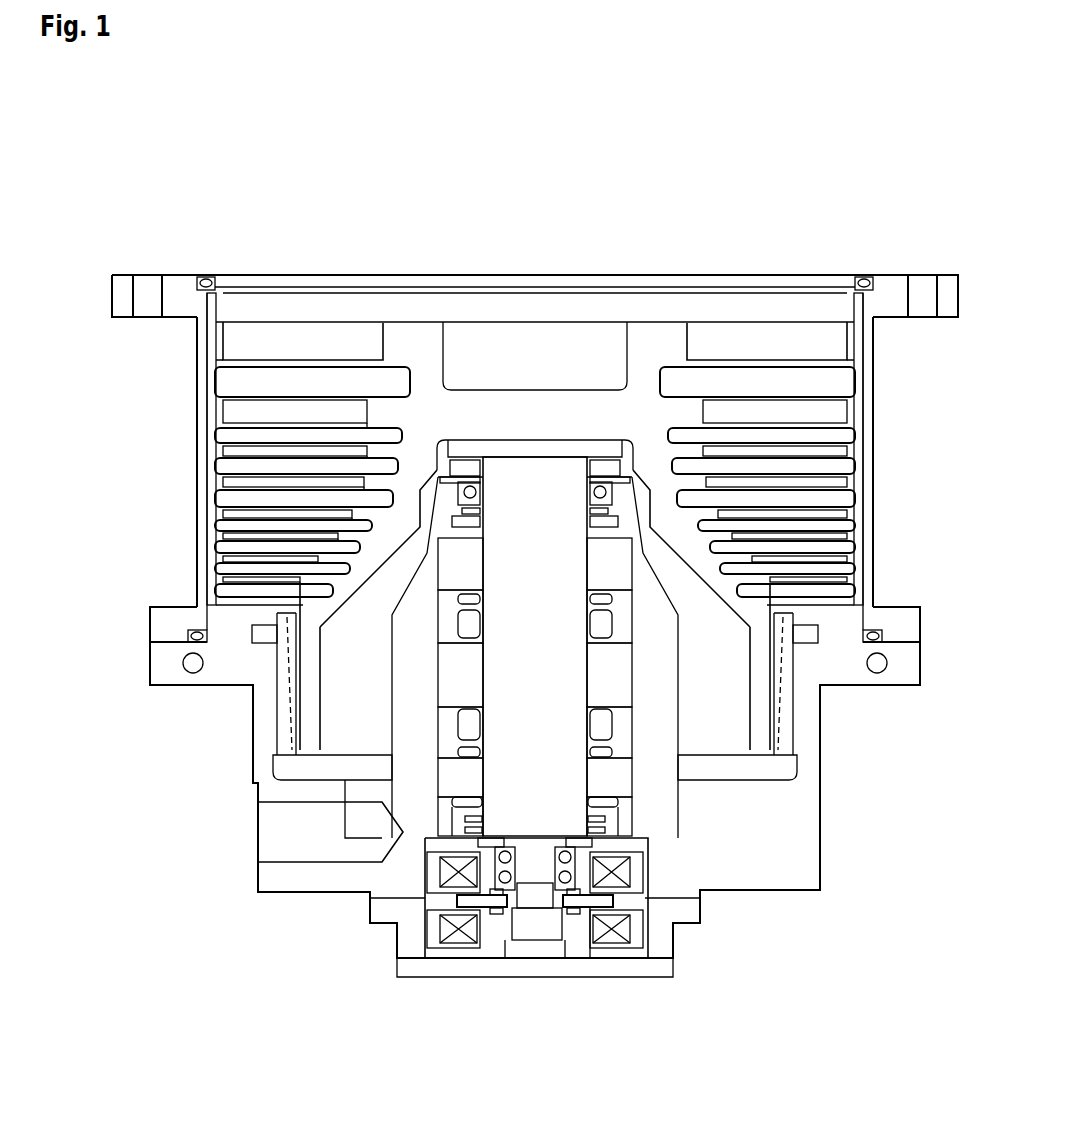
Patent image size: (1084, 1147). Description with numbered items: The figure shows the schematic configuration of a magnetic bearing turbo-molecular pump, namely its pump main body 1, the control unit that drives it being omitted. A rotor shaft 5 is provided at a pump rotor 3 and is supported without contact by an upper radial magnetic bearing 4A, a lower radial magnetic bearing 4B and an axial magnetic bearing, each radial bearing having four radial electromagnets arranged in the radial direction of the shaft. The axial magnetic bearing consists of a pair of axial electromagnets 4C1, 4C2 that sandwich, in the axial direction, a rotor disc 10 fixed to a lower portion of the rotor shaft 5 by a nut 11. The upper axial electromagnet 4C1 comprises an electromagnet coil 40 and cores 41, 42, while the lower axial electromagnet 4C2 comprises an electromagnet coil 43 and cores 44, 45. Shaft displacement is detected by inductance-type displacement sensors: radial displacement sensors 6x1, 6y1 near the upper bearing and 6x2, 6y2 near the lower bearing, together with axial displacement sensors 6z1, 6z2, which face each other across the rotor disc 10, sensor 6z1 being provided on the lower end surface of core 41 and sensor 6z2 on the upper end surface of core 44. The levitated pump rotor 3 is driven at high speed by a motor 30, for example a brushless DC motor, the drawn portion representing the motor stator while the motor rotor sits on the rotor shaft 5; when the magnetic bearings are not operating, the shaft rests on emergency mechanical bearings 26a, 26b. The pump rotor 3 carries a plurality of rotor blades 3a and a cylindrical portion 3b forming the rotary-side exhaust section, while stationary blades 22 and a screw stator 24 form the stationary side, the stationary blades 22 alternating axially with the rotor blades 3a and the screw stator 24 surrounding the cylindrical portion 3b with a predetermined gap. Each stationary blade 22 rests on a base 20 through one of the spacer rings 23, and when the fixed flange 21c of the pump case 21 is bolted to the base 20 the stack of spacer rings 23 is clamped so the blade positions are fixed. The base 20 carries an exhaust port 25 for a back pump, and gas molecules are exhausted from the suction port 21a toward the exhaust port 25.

The pump main body 1 is at (535, 163).
The pump rotor 3 is at (420, 340).
The rotor blades 3a is at (240, 413).
The cylindrical portion 3b is at (310, 737).
The rotor shaft 5 is at (548, 478).
The radial magnetic bearing 4A is at (620, 565).
The radial magnetic bearing 4B is at (620, 773).
The axial electromagnet 4C1 is at (668, 912).
The axial electromagnet 4C2 is at (556, 1008).
The upper radial displacement sensor (x) 6x1 is at (613, 512).
The upper radial displacement sensor (y) 6y1 is at (776, 483).
The lower radial displacement sensor (x) 6x2 is at (598, 828).
The lower radial displacement sensor (y) 6y2 is at (765, 827).
The axial displacement sensor 6z1 is at (497, 898).
The axial displacement sensor 6z2 is at (498, 917).
The rotor disc 10 is at (455, 910).
The nut 11 is at (537, 933).
The base 20 is at (163, 668).
The pump case 21 is at (200, 523).
The suction port 21a is at (300, 277).
The fixed flange 21c is at (160, 622).
The stationary blades 22 is at (242, 383).
The spacer rings 23 is at (210, 457).
The screw stator 24 is at (285, 720).
The exhaust port 25 is at (272, 837).
The emergency mechanical bearing 26a is at (600, 490).
The emergency mechanical bearing 26b is at (495, 858).
The motor 30 is at (617, 665).
The electromagnet coil 40 is at (627, 890).
The core 41 is at (635, 848).
The core 42 is at (627, 935).
The electromagnet coil 43 is at (617, 930).
The core 44 is at (590, 947).
The core 45 is at (642, 930).